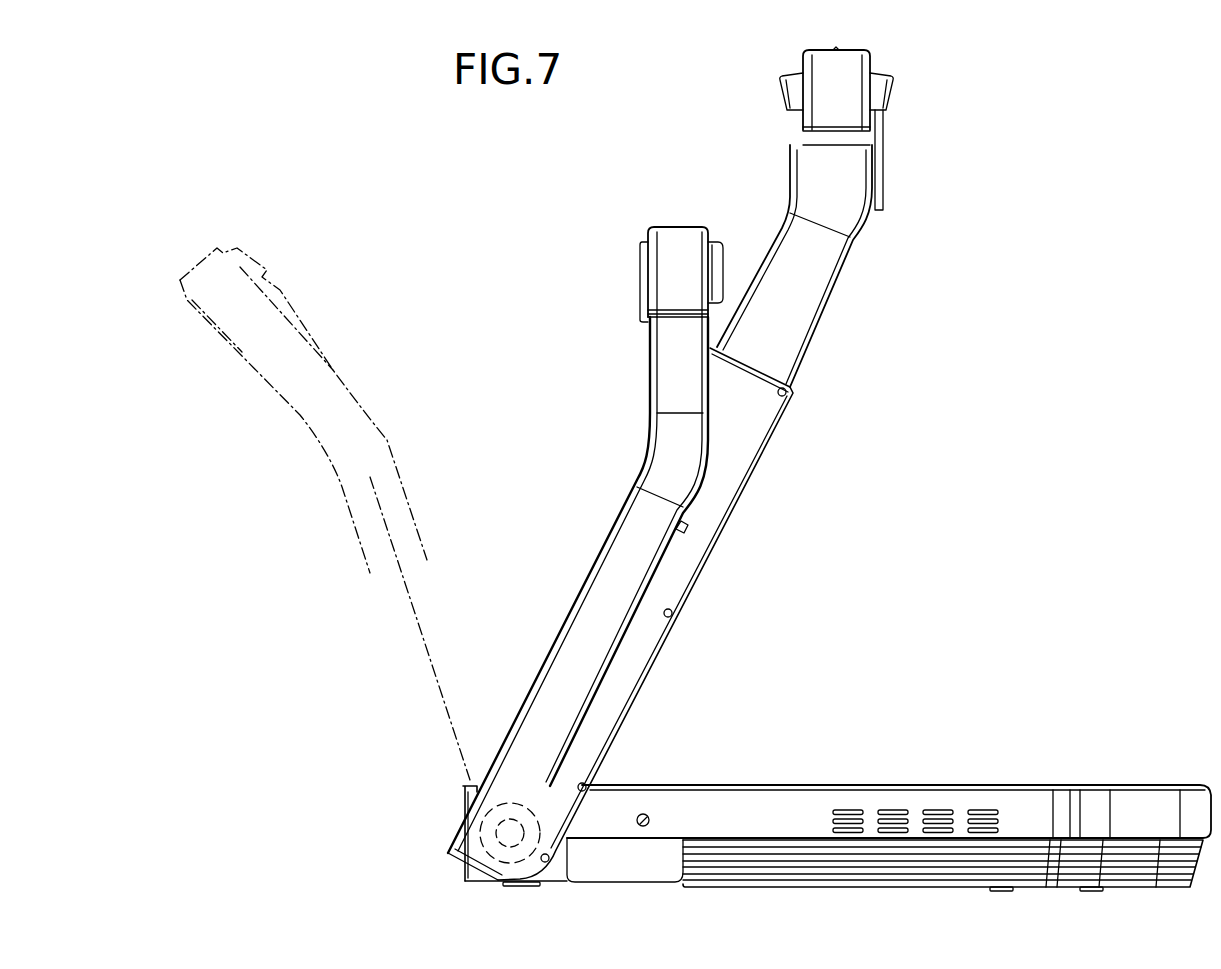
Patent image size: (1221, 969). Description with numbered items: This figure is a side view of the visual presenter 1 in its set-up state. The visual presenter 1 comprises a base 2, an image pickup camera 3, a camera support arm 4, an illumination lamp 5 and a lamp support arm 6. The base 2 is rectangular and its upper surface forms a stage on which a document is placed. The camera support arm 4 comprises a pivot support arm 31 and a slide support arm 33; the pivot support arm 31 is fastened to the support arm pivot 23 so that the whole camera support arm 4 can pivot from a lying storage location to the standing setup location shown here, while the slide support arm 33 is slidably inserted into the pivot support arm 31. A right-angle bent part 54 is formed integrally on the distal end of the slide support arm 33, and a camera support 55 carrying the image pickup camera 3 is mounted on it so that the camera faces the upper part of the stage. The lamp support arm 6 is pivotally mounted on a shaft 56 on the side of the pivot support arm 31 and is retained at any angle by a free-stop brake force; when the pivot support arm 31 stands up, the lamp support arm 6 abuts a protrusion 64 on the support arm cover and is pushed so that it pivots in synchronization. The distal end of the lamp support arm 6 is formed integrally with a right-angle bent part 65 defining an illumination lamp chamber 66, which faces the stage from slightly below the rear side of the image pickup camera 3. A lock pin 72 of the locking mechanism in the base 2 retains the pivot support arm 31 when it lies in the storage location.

The visual presenter 1 is at (1040, 360).
The base 2 is at (925, 787).
The image pickup camera 3 is at (797, 150).
The camera support arm 4 is at (848, 329).
The illumination lamp 5 is at (626, 300).
The lamp support arm 6 is at (625, 537).
The support arm pivot 23 is at (512, 812).
The pivot support arm 31 is at (787, 406).
The slide support arm 33 is at (810, 283).
The right-angle bent part 54 is at (850, 88).
The camera support 55 is at (790, 98).
The shaft 56 is at (475, 836).
The protrusion 64 is at (686, 530).
The right-angle bent part 65 is at (668, 240).
The illumination lamp chamber 66 is at (643, 270).
The lock pin 72 is at (647, 816).